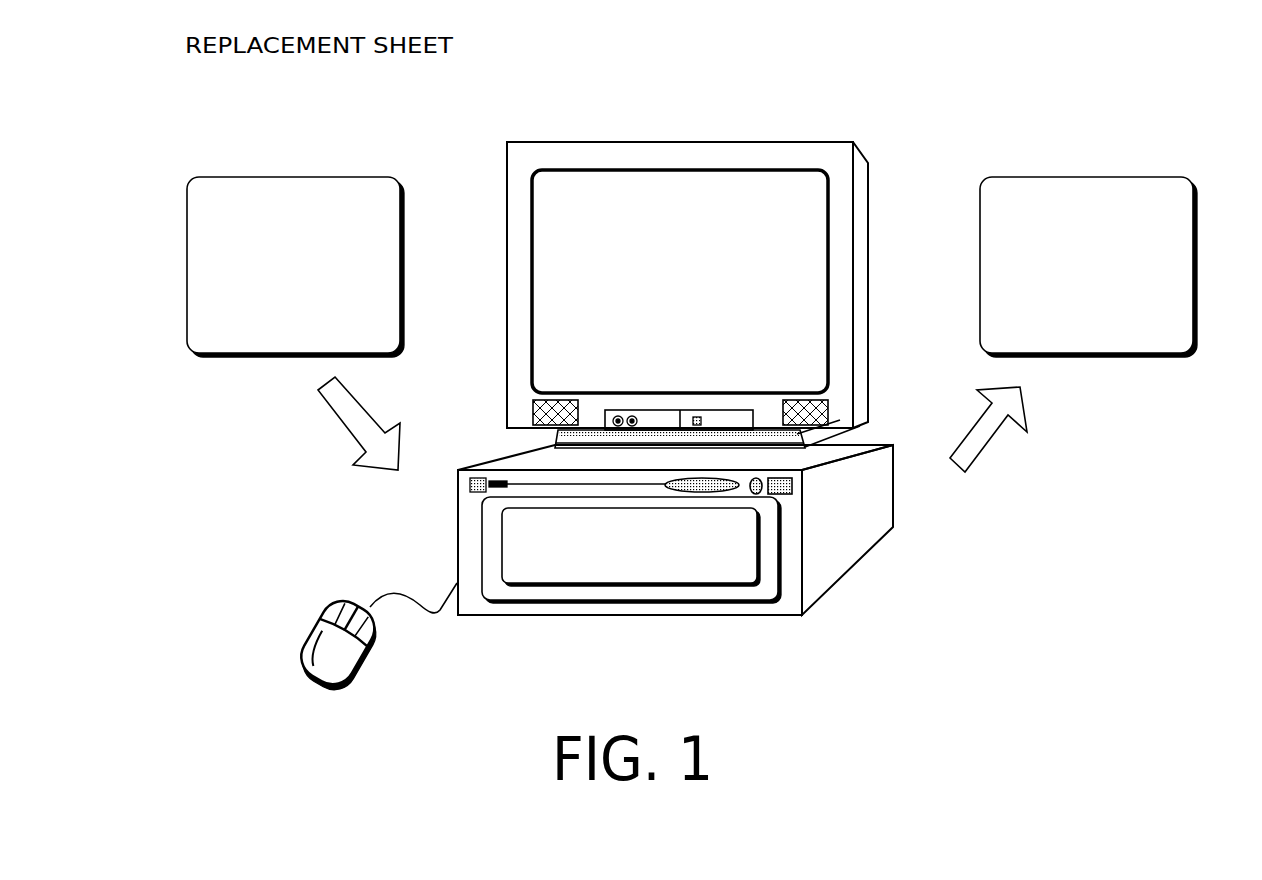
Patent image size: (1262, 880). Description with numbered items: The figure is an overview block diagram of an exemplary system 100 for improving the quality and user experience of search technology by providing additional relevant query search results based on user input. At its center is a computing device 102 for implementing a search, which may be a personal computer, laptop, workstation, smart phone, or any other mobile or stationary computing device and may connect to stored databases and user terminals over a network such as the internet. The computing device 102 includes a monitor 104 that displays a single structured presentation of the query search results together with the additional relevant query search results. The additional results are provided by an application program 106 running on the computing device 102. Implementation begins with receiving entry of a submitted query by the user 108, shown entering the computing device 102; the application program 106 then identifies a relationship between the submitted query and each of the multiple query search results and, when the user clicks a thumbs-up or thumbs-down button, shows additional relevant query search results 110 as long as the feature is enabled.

The system 100 is at (1117, 58).
The computing device 102 is at (913, 558).
The monitor 104 is at (810, 199).
The application program 106 is at (610, 568).
The submitted query by the user 108 is at (311, 274).
The additional relevant query search results 110 is at (1069, 309).